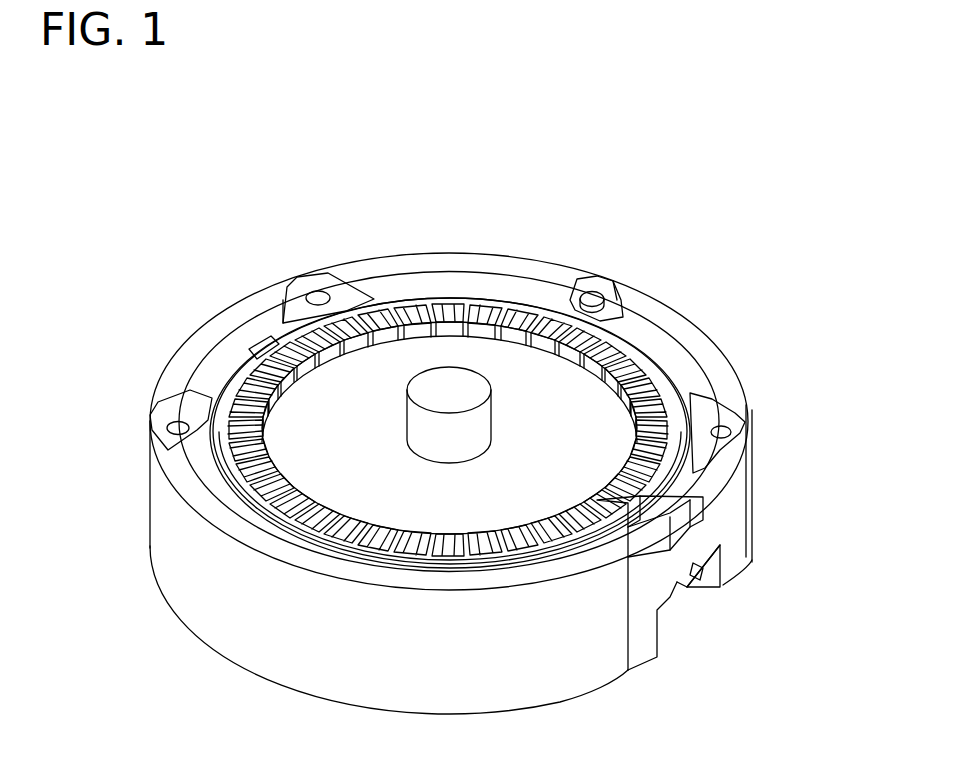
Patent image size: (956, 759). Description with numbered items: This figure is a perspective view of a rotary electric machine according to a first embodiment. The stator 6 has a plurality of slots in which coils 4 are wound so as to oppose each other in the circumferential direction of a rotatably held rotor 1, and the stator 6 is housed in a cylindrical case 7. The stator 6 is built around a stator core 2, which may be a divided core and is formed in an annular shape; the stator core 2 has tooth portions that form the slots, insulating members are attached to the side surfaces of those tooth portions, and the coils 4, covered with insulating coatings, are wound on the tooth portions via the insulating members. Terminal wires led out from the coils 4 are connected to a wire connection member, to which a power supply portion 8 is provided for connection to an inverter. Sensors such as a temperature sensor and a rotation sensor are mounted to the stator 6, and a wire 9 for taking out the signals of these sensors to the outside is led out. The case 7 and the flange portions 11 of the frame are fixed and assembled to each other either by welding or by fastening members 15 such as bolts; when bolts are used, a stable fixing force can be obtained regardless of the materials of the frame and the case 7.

The rotor 1 is at (480, 421).
The stator core 2 is at (373, 307).
The coil 4 is at (423, 307).
The stator 6 is at (372, 384).
The case 7 is at (707, 355).
The power supply portion 8 is at (723, 583).
The wire 9 is at (690, 497).
The flange portion 11 is at (686, 225).
The fastening member 15 is at (600, 293).